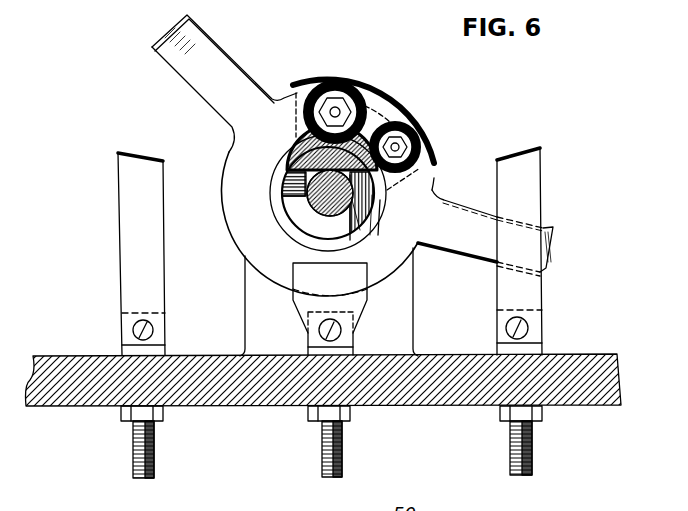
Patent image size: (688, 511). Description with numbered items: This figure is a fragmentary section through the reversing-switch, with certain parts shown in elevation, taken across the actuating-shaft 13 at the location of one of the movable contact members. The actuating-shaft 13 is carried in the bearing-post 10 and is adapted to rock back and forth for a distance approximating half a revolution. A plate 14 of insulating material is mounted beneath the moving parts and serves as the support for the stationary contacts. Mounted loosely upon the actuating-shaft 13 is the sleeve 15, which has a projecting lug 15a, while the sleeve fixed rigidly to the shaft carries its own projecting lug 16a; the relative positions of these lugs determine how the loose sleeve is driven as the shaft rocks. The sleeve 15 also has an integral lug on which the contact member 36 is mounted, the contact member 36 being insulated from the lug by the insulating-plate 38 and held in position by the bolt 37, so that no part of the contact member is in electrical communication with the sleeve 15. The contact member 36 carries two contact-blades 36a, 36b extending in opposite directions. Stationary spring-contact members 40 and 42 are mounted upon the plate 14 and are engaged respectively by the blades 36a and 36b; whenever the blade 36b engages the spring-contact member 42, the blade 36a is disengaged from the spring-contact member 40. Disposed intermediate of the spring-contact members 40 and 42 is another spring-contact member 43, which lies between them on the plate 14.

The bearing-post 10 is at (329, 302).
The actuating-shaft 13 is at (323, 183).
The plate of insulating material 14 is at (52, 393).
The sleeve 15 is at (367, 223).
The projecting lug 15a is at (293, 208).
The projecting lug 16a is at (320, 153).
The contact member 36 is at (414, 102).
The contact-blade 36a is at (224, 83).
The contact-blade 36b is at (485, 233).
The bolt 37 is at (367, 88).
The insulating-plate 38 is at (323, 87).
The stationary contact member 40 is at (141, 254).
The stationary contact member 42 is at (519, 251).
The spring-contact member 43 is at (365, 307).